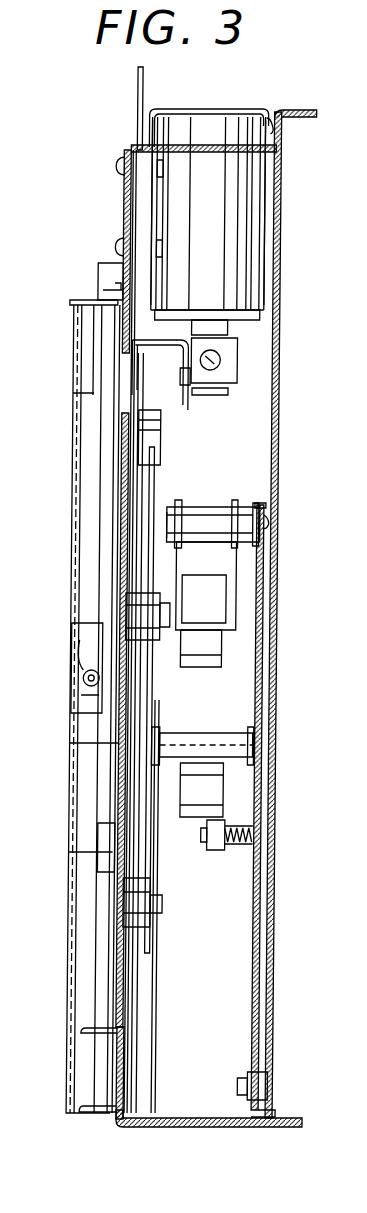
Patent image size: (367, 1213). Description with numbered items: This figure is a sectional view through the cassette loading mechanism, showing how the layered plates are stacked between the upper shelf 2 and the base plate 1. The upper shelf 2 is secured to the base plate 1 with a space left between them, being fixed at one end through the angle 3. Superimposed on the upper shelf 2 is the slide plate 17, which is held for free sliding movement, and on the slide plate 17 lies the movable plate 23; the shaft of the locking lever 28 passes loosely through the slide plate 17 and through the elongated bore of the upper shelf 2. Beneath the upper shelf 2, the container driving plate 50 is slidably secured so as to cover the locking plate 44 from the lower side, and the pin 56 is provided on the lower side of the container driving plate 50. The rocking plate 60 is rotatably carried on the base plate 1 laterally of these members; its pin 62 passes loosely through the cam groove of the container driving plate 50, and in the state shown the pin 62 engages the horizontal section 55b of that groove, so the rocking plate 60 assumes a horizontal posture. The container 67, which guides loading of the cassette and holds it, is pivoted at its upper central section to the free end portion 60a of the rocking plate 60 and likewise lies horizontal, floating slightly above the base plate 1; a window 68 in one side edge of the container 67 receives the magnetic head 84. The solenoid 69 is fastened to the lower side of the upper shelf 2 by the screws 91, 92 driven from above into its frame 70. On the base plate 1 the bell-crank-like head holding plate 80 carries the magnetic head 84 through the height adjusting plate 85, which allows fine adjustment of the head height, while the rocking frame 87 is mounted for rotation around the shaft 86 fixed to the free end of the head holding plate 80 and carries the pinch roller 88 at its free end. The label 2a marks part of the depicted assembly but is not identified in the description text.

The base plate 1 is at (279, 370).
The upper shelf 2 is at (103, 1045).
The cylinder barrel 2a is at (204, 158).
The angle 3 is at (196, 1117).
The slide plate 17 is at (121, 496).
The movable plate 23 is at (112, 547).
The locking lever 28 is at (130, 356).
The locking plate 44 is at (160, 434).
The container driving plate 50 is at (155, 470).
The horizontal section of cam groove 55b is at (92, 700).
The pin 56 is at (171, 737).
The rocking plate 60 is at (70, 440).
The free end portion of rocking plate 60a is at (88, 786).
The pin 62 is at (84, 678).
The container 67 is at (72, 975).
The window 68 is at (84, 790).
The solenoid 69 is at (249, 200).
The frame of solenoid 70 is at (147, 112).
The head holding plate 80 is at (256, 975).
The magnetic head 84 is at (186, 818).
The height adjusting plate 85 is at (258, 808).
The shaft 86 is at (206, 513).
The rocking frame 87 is at (223, 560).
The pinch roller 88 is at (223, 655).
The screw 91 is at (113, 246).
The screw 92 is at (113, 160).